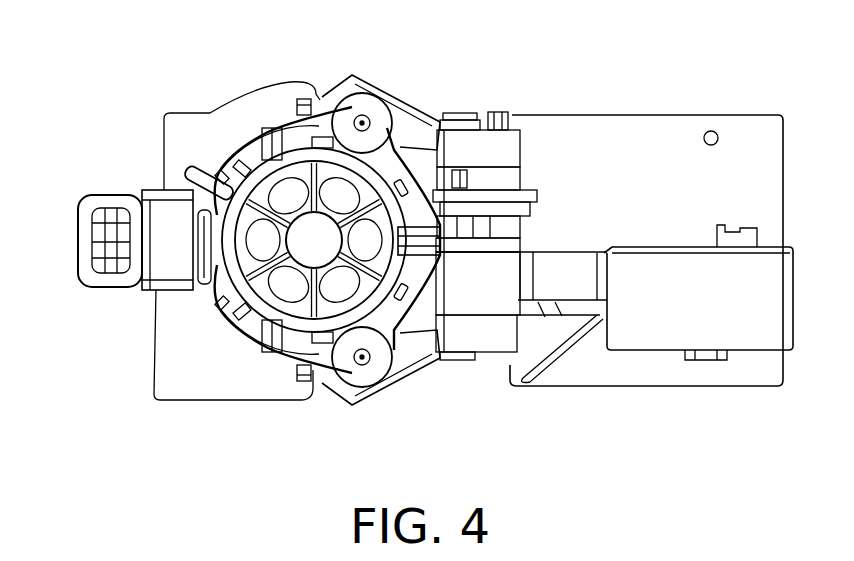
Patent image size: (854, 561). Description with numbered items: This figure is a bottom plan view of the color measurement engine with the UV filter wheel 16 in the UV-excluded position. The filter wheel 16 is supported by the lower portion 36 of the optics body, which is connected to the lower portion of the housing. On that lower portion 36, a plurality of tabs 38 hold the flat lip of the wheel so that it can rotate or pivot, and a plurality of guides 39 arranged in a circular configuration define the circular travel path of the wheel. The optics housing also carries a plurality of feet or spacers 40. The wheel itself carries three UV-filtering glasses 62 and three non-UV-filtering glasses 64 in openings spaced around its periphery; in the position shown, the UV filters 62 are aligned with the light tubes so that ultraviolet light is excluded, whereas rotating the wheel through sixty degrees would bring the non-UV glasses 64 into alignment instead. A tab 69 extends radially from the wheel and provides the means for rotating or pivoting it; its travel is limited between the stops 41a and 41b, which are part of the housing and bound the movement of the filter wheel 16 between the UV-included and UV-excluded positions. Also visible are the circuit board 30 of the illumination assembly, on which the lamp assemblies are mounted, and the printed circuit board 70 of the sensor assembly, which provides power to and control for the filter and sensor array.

The UV filter wheel 16 is at (222, 298).
The circuit board 30 is at (193, 148).
The lower portion 36 is at (438, 165).
The tabs 38 is at (262, 165).
The guides 39 is at (327, 100).
The feet or spacers 40 is at (368, 103).
The stop 41a is at (207, 168).
The stop 41b is at (222, 308).
The UV-filtering glasses 62 is at (341, 199).
The non-UV-filtering glasses 64 is at (289, 196).
The tab 69 is at (197, 175).
The circuit board 70 is at (677, 114).